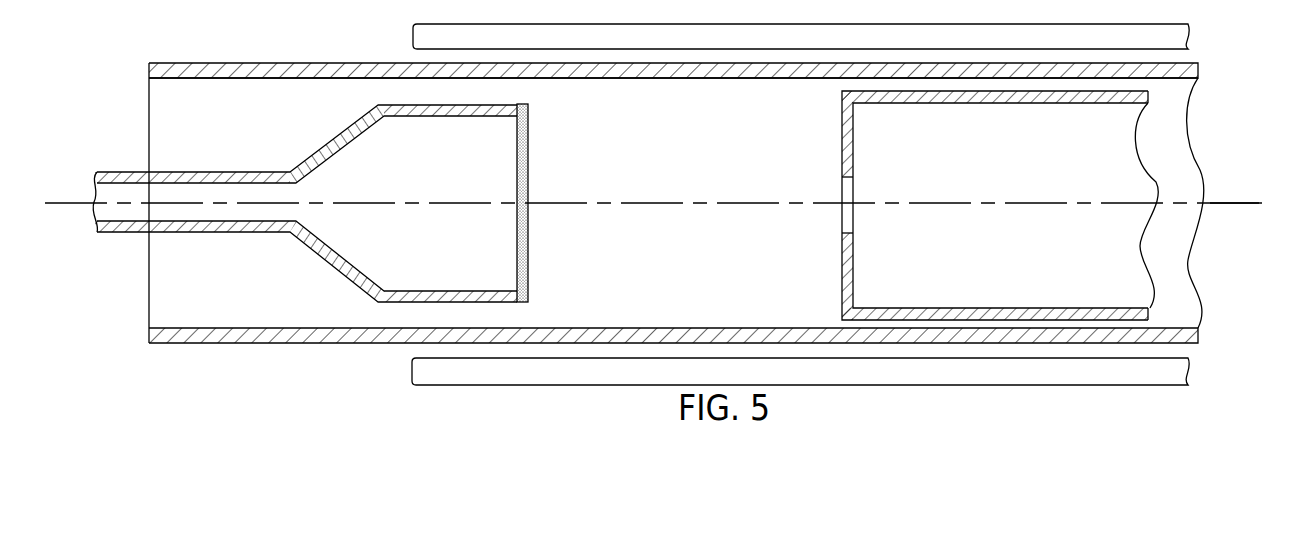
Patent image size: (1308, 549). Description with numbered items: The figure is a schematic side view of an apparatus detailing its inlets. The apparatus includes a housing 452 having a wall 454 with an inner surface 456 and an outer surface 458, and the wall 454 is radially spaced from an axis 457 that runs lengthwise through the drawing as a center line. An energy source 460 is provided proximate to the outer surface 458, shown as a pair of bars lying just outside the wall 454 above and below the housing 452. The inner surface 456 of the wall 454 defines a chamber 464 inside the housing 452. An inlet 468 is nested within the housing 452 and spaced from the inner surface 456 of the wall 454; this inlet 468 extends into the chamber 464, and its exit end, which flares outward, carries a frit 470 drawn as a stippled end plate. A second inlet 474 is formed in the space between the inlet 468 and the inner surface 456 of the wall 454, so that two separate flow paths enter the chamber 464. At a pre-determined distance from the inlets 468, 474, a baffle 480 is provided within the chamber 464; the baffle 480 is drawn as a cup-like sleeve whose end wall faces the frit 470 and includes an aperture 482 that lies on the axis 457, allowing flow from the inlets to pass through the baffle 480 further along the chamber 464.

The housing 452 is at (634, 233).
The wall 454 is at (240, 343).
The inner surface 456 is at (221, 327).
The axis 457 is at (1258, 203).
The outer surface 458 is at (296, 343).
The energy source 460 is at (413, 40).
The chamber 464 is at (165, 288).
The inlet 468 is at (343, 203).
The frit 470 is at (528, 167).
The inlet 474 is at (155, 115).
The baffle 480 is at (969, 205).
The aperture 482 is at (847, 188).